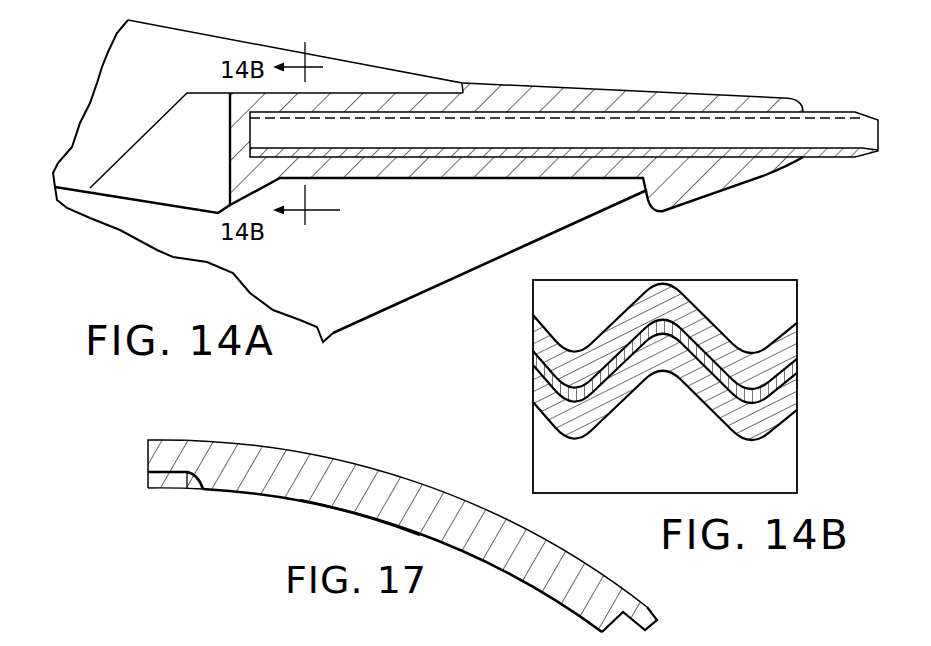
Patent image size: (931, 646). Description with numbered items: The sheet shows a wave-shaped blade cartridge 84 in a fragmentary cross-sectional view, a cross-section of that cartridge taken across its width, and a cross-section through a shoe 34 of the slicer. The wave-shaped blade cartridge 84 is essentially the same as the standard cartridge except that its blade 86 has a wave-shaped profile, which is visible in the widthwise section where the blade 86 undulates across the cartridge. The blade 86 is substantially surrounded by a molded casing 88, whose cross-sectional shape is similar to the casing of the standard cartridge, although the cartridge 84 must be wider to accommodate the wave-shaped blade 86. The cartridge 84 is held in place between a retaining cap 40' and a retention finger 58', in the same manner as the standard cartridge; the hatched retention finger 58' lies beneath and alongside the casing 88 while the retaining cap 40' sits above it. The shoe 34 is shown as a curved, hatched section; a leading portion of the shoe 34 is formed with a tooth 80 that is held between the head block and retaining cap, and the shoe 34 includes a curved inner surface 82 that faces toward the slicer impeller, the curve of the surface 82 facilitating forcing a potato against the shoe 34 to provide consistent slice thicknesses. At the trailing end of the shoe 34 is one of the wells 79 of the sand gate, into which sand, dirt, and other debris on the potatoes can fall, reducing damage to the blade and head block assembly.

In FIG. 14A, the retaining cap 40' is at (295, 55).
In FIG. 14B, the retaining cap 40' is at (665, 292).
In FIG. 14A, the retention finger 58' is at (350, 181).
In FIG. 14B, the retention finger 58' is at (703, 386).
In FIG. 14A, the wave-shaped blade cartridge 84 is at (550, 76).
In FIG. 14A, the blade 86 is at (823, 132).
In FIG. 14B, the blade 86 is at (795, 362).
In FIG. 14A, the molded casing 88 is at (640, 102).
In FIG. 14B, the molded casing 88 is at (787, 347).
In FIG. 17, the shoe 34 is at (306, 436).
In FIG. 17, the wells 79 is at (165, 480).
In FIG. 17, the tooth 80 is at (649, 611).
In FIG. 17, the curved inner surface 82 is at (313, 503).